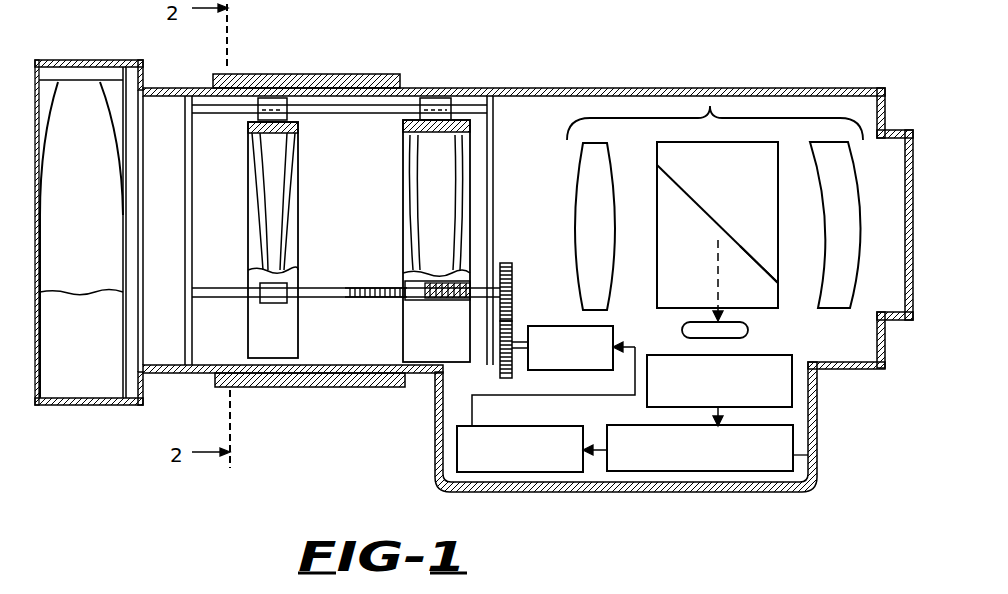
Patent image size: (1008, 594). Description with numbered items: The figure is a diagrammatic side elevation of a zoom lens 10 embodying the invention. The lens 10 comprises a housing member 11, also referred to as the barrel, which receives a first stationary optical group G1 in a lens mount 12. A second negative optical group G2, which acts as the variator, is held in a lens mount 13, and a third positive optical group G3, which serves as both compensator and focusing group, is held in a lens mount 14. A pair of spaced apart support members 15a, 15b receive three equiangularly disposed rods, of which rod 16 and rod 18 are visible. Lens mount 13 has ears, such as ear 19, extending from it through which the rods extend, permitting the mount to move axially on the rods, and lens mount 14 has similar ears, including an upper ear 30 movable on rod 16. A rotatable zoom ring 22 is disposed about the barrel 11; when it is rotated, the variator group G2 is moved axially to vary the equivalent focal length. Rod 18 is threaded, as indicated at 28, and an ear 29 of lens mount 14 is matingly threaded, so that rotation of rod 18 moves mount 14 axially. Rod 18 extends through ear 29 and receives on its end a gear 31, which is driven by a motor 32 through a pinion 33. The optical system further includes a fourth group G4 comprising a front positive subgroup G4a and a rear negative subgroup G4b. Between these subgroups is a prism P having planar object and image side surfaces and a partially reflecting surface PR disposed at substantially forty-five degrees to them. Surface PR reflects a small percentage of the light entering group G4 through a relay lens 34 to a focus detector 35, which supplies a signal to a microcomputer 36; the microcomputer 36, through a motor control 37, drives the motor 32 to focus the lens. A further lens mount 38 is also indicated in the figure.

The lens 10 is at (514, 249).
The housing member 11 is at (582, 87).
The lens mount 12 is at (95, 392).
The lens mount 13 is at (272, 360).
The lens mount 14 is at (447, 123).
The support member 15a is at (192, 183).
The support member 15b is at (492, 148).
The rod 16 is at (343, 108).
The rod 18 is at (342, 287).
The ear 19 is at (277, 110).
The zoom ring 22 is at (323, 389).
The threaded portion 28 is at (443, 280).
The ear 29 is at (413, 305).
The upper ear 30 is at (429, 97).
The gear 31 is at (513, 276).
The motor 32 is at (592, 373).
The pinion 33 is at (511, 345).
The relay lens 34 is at (750, 329).
The focus detector 35 is at (799, 398).
The microcomputer 36 is at (808, 460).
The motor control 37 is at (556, 473).
The lens mount 38 is at (896, 326).
The first stationary optical group G1 is at (50, 270).
The second negative optical group G2 is at (278, 256).
The third positive optical group G3 is at (412, 195).
The fourth group G4 is at (710, 106).
The front positive subgroup G4a is at (572, 211).
The rear negative subgroup G4b is at (834, 310).
The partially reflecting surface PR is at (694, 199).
The prism P is at (657, 284).